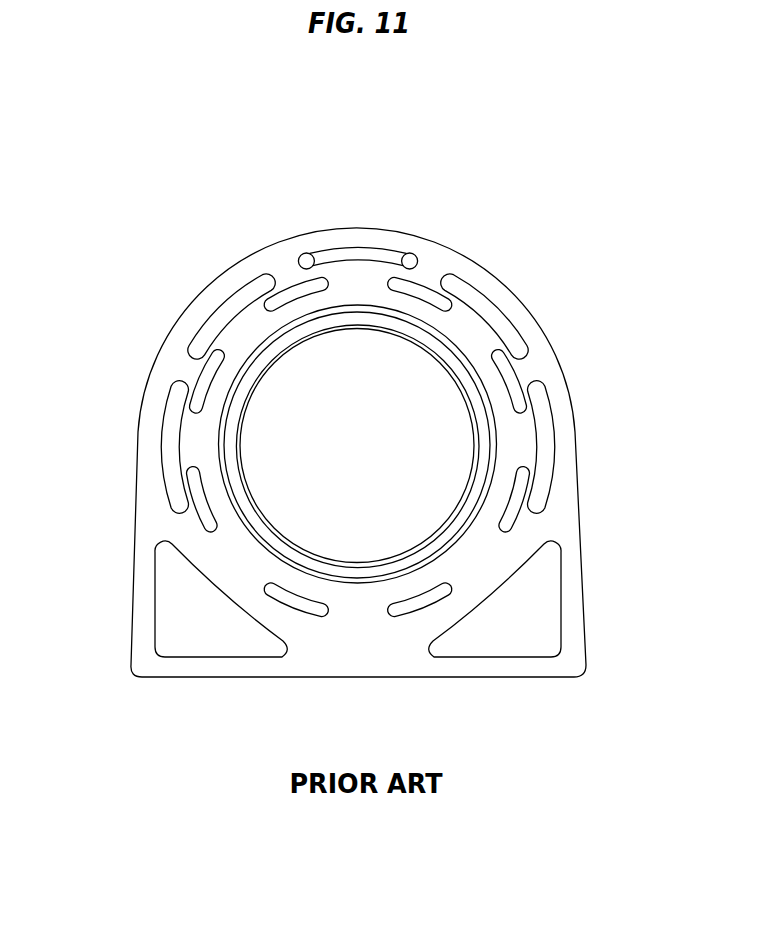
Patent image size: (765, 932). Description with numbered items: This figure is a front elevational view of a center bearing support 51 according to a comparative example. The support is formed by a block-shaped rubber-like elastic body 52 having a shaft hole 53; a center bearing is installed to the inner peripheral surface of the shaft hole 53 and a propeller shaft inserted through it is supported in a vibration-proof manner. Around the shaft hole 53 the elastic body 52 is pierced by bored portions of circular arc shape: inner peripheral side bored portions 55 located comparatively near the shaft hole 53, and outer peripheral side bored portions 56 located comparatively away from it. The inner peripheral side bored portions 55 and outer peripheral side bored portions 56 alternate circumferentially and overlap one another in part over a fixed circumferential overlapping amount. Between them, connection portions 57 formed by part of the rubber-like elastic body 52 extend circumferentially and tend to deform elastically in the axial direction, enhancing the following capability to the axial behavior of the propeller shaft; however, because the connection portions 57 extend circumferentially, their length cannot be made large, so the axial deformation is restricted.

The block type center bearing support 51 is at (561, 341).
The rubber-like elastic body 52 is at (566, 440).
The shaft hole 53 is at (283, 447).
The inner peripheral side bored portions 55 is at (303, 293).
The outer peripheral side bored portions 56 is at (352, 257).
The connection portions 57 is at (303, 257).